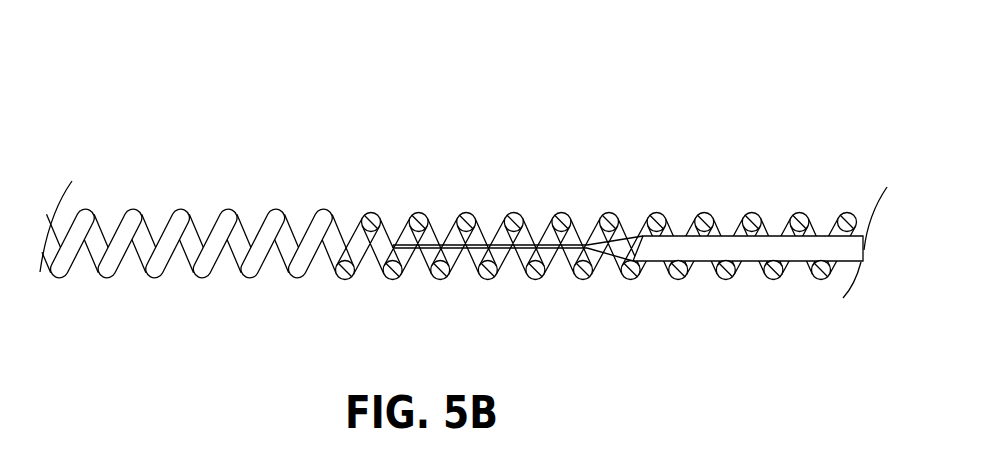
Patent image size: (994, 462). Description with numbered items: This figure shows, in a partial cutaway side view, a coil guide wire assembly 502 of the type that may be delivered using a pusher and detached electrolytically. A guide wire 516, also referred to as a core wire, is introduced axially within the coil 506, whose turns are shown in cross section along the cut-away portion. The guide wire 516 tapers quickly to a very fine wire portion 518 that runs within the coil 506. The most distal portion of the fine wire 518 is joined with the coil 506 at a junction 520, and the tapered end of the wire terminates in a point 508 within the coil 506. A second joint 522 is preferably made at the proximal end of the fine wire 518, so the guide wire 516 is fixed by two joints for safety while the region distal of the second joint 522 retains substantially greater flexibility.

The coil guide wire assembly 502 is at (570, 222).
The coil 506 is at (279, 210).
The point 508 is at (343, 282).
The guide wire 516 is at (743, 255).
The fine wire portion 518 is at (496, 246).
The junction 520 is at (393, 246).
The second joint 522 is at (632, 237).